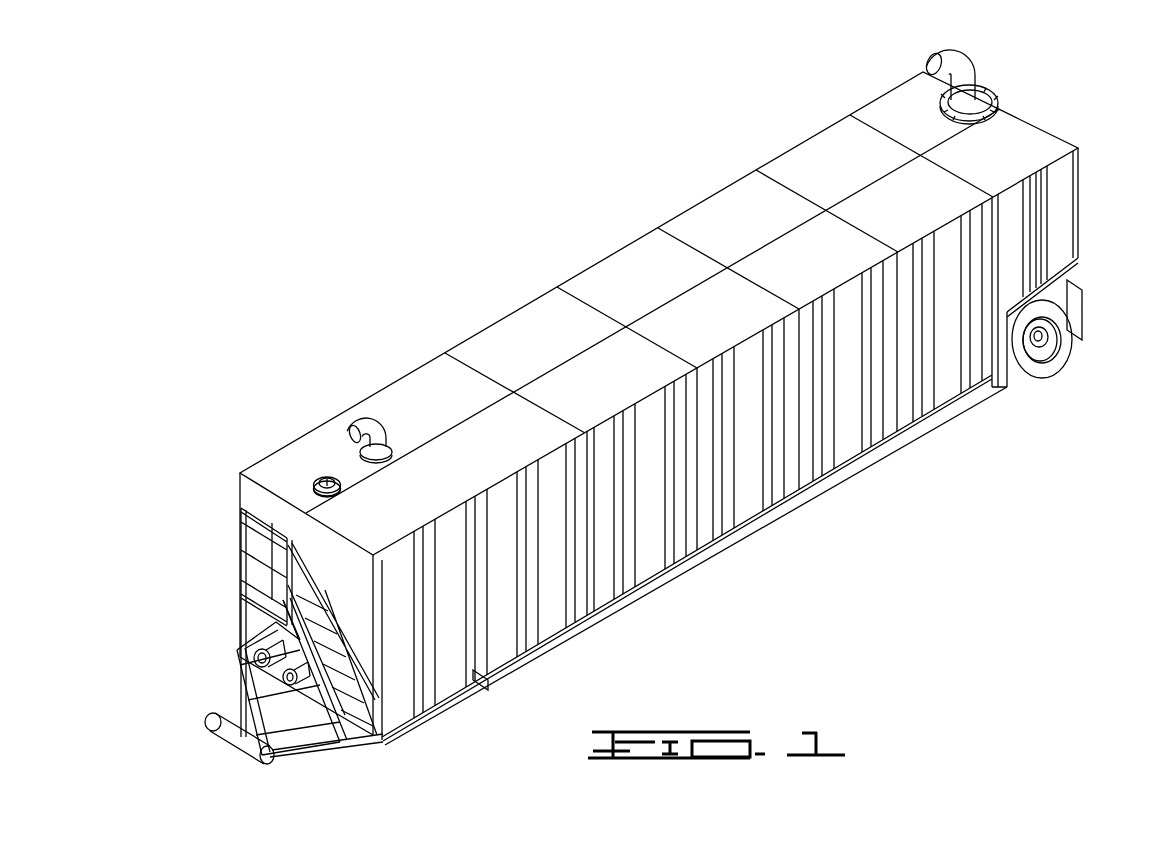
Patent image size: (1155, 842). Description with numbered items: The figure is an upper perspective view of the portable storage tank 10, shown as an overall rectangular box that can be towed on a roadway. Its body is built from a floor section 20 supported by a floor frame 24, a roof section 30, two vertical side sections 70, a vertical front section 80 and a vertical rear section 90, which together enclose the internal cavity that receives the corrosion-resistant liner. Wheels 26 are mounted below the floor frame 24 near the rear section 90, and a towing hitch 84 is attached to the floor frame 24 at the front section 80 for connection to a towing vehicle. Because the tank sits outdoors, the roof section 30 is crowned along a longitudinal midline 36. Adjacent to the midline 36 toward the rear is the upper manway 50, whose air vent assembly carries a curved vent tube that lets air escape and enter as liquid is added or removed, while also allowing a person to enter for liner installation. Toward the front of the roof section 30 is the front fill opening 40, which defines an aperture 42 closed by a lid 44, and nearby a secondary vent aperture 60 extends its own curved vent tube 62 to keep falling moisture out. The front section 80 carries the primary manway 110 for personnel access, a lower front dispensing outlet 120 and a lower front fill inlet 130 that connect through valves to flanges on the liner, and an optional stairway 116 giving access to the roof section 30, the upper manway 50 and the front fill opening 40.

The portable storage tank 10 is at (314, 95).
The floor section 20 is at (428, 707).
The floor frame 24 is at (773, 522).
The wheels 26 is at (1061, 358).
The roof section 30 is at (813, 162).
The longitudinal midline 36 is at (770, 236).
The front fill opening 40 is at (320, 480).
The aperture 42 is at (313, 492).
The lid 44 is at (324, 478).
The upper manway 50 is at (978, 94).
The secondary vent aperture 60 is at (388, 440).
The curved vent tube 62 is at (350, 428).
The vertical side sections 70 is at (851, 436).
The vertical front section 80 is at (290, 520).
The towing hitch 84 is at (316, 753).
The vertical rear section 90 is at (1073, 200).
The primary manway 110 is at (276, 622).
The stairway 116 is at (268, 752).
The lower front dispensing outlet 120 is at (258, 652).
The lower front fill inlet 130 is at (285, 678).